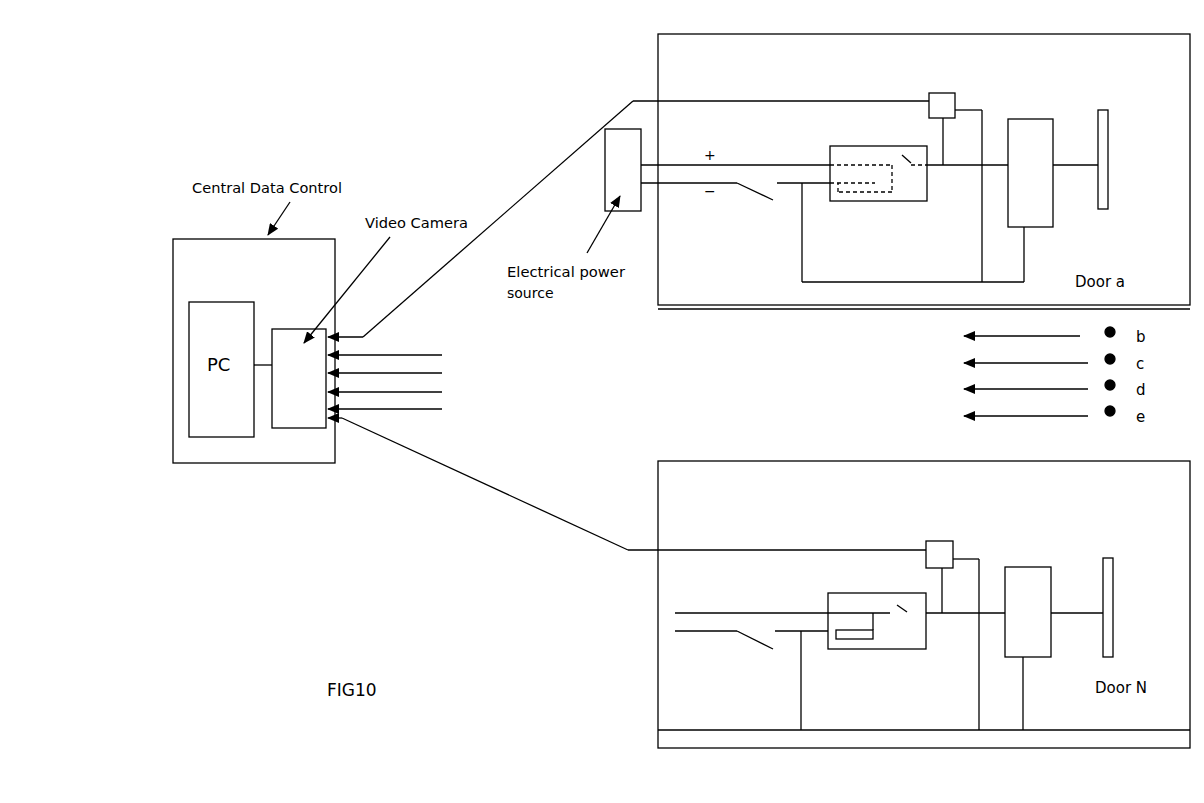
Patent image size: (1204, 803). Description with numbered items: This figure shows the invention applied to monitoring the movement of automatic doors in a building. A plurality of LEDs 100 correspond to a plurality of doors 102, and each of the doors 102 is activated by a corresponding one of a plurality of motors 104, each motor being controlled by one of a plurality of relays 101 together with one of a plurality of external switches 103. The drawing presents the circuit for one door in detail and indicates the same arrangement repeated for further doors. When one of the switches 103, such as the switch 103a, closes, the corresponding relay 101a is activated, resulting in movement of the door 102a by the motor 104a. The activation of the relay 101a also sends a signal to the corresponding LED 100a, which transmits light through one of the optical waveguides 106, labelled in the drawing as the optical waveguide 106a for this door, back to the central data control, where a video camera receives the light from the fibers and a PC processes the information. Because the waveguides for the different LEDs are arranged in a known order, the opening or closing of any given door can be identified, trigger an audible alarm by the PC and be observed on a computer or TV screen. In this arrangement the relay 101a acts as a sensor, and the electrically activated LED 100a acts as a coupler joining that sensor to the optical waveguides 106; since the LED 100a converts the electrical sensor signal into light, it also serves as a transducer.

The LED 100 is at (935, 520).
The LED 100a is at (938, 91).
The relay 101 is at (872, 586).
The relay 101a is at (830, 146).
The door 102 is at (1119, 607).
The door 102a is at (1131, 159).
The external switch 103 is at (756, 643).
The switch 103a is at (764, 194).
The motor 104 is at (1018, 565).
The motor 104a is at (1017, 116).
The optical waveguides 106 is at (345, 343).
The optical fiber to door a 106a is at (586, 145).